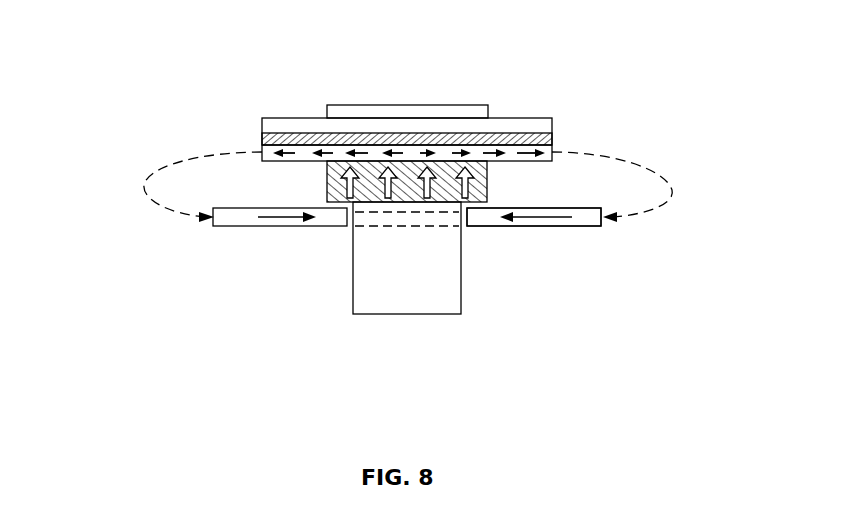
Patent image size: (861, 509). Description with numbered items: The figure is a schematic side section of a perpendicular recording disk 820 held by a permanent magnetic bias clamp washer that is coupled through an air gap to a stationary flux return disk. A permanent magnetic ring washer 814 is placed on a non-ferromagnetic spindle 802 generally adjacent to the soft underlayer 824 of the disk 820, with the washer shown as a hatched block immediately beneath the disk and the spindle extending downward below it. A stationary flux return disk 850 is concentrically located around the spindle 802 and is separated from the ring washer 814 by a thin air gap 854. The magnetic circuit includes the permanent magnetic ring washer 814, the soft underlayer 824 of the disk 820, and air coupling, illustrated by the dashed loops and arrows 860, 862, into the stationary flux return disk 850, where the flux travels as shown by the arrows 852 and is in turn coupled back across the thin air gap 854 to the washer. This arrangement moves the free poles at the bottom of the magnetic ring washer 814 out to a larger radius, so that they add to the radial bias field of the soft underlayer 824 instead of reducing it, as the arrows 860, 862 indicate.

The non-ferromagnetic spindle 802 is at (476, 320).
The permanent magnetic ring washer 814 is at (488, 180).
The disk 820 is at (543, 106).
The soft underlayer 824 is at (553, 152).
The stationary flux return disk 850 is at (238, 227).
The arrows 852 is at (288, 218).
The air gap 854 is at (481, 217).
The arrows 860 is at (157, 165).
The arrows 862 is at (673, 190).